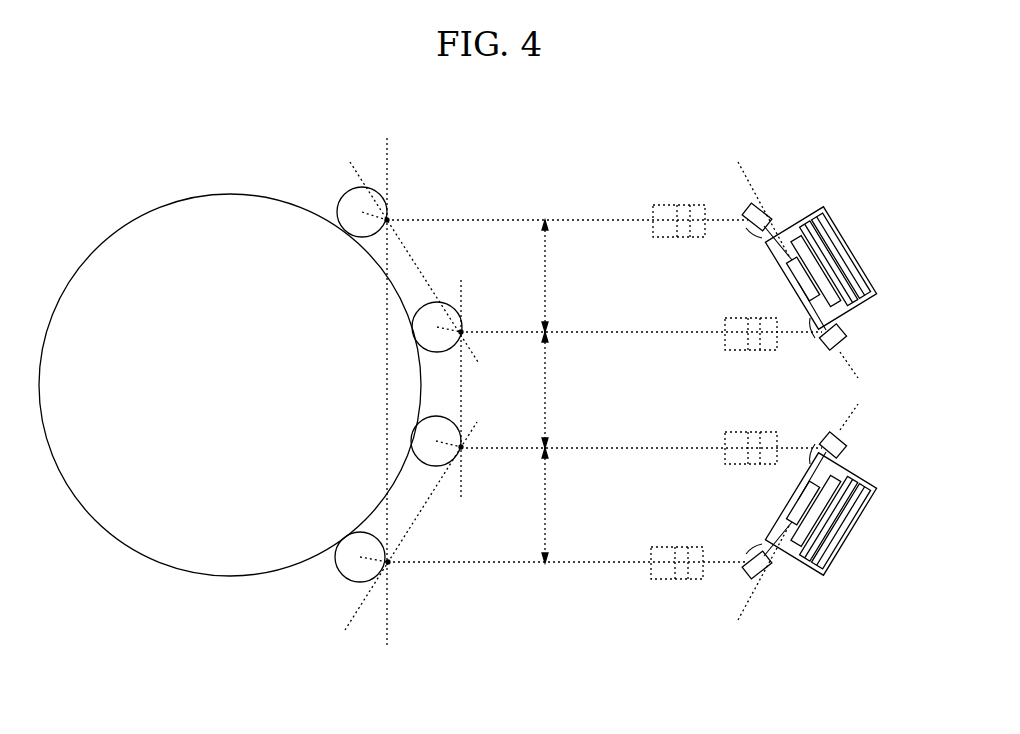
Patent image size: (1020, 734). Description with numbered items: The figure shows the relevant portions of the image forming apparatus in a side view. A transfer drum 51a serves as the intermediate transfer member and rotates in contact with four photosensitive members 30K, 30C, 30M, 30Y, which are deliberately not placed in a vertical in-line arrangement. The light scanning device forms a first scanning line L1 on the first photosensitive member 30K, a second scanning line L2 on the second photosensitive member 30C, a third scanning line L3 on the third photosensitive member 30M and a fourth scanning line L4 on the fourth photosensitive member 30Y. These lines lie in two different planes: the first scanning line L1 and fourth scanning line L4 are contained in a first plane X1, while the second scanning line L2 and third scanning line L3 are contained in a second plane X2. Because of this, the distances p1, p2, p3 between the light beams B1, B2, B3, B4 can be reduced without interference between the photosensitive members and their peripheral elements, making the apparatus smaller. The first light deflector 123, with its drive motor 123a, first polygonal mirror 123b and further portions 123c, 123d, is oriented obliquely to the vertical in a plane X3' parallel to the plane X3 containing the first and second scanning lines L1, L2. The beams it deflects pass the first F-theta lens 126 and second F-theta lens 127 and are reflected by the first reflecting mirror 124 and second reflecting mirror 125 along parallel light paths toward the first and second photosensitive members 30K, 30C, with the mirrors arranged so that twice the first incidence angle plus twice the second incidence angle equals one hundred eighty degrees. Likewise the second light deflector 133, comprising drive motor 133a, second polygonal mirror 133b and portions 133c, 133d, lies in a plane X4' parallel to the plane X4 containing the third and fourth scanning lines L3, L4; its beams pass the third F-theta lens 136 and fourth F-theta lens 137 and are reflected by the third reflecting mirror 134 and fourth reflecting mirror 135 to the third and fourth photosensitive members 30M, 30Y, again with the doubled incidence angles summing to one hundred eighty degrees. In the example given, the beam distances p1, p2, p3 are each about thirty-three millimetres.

The transfer drum 51a is at (164, 203).
The first photosensitive member 30K is at (343, 199).
The second photosensitive member 30C is at (437, 352).
The third photosensitive member 30M is at (433, 467).
The fourth photosensitive member 30Y is at (340, 576).
The first plane X1 is at (387, 374).
The second plane X2 is at (460, 373).
The plane containing first and second scanning lines X3 is at (408, 246).
The plane containing third and fourth scanning lines X4 is at (405, 537).
The plane of first light deflector X3' is at (756, 194).
The plane of second light deflector X4' is at (755, 586).
The first scanning line L1 is at (392, 217).
The second scanning line L2 is at (464, 331).
The third scanning line L3 is at (464, 448).
The fourth scanning line L4 is at (391, 565).
The first light beam B1 is at (612, 218).
The second light beam B2 is at (612, 330).
The third light beam B3 is at (612, 446).
The fourth light beam B4 is at (612, 560).
The distance between first and second light beams p1 is at (557, 276).
The distance between second and third light beams p2 is at (557, 390).
The distance between third and fourth light beams p3 is at (557, 505).
The first light deflector 123 is at (856, 248).
The drive motor 123a is at (788, 220).
The first polygonal mirror 123b is at (810, 243).
The first deflector reflecting surface 123c is at (782, 242).
The second deflector reflecting surface 123d is at (830, 327).
The first reflecting mirror 124 is at (744, 208).
The second reflecting mirror 125 is at (850, 346).
The first F-theta lens 126 is at (672, 205).
The second F-theta lens 127 is at (745, 318).
The second light deflector 133 is at (856, 534).
The drive motor 133a is at (788, 562).
The second polygonal mirror 133b is at (810, 539).
The third deflector reflecting surface 133c is at (830, 455).
The fourth deflector reflecting surface 133d is at (782, 540).
The third reflecting mirror 134 is at (850, 436).
The fourth reflecting mirror 135 is at (744, 574).
The third F-theta lens 136 is at (745, 432).
The fourth F-theta lens 137 is at (670, 547).